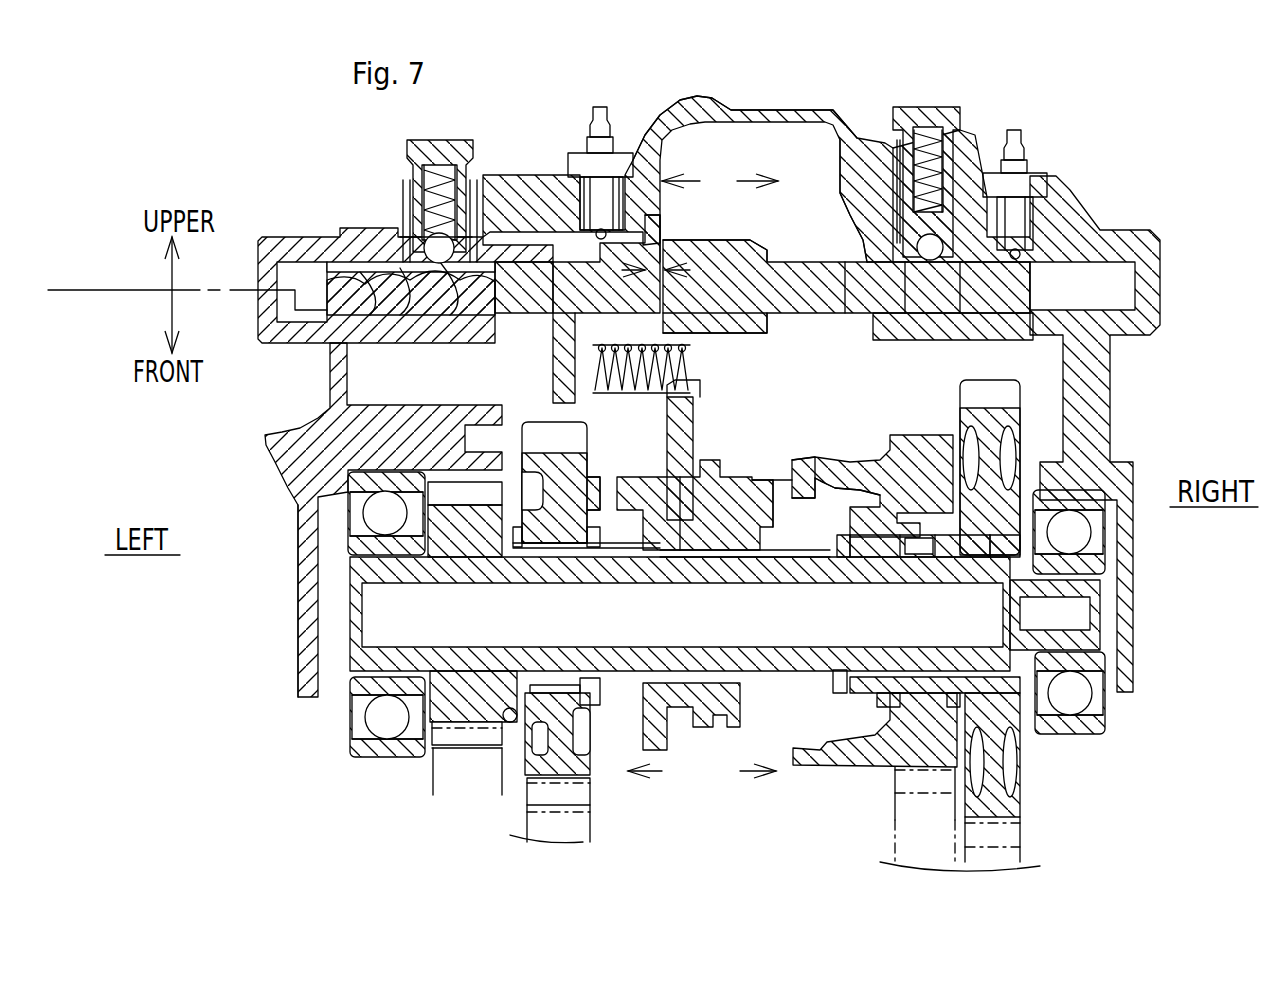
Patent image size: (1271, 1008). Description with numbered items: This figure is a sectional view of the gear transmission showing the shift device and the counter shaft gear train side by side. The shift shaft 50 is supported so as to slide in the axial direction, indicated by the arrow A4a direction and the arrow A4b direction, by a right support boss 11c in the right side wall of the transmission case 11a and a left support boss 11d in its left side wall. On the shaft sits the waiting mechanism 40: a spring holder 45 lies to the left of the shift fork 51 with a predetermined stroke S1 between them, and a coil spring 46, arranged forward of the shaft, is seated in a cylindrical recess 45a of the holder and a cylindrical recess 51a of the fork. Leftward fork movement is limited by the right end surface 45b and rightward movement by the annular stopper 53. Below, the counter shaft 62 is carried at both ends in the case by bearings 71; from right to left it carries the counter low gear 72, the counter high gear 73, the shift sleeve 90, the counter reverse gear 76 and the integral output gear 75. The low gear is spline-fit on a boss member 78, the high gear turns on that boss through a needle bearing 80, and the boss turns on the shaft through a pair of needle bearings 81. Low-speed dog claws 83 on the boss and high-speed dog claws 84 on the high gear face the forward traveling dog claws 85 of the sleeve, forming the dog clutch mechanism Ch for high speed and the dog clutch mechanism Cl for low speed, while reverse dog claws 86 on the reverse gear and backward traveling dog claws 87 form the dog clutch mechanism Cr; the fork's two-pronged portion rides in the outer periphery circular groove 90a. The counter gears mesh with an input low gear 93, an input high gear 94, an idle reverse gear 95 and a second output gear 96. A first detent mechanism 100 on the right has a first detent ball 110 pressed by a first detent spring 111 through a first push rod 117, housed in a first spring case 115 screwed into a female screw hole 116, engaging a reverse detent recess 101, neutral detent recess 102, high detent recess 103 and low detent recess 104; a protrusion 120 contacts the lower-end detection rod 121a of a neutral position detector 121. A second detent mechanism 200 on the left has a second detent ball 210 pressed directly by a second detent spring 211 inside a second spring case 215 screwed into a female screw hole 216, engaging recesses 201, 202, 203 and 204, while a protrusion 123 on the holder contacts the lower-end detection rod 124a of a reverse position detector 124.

The transmission case 11a is at (297, 517).
The right support boss 11c is at (1100, 350).
The left support boss 11d is at (312, 347).
The waiting mechanism 40 is at (690, 333).
The spring holder 45 is at (585, 405).
The cylindrical recess 45a is at (558, 345).
The right end surface 45b is at (655, 250).
The coil spring 46 is at (640, 395).
The shift shaft 50 is at (803, 290).
The shift fork 51 is at (682, 432).
The cylindrical recess 51a is at (688, 360).
The annular stopper 53 is at (740, 258).
The counter shaft 62 is at (393, 572).
The bearings 71 is at (368, 750).
The counter low gear 72 is at (1003, 805).
The counter high gear 73 is at (913, 758).
The output gear 75 is at (455, 715).
The counter reverse gear 76 is at (575, 768).
The boss member 78 is at (897, 537).
The needle bearing 80 is at (913, 535).
The needle bearings 81 is at (867, 553).
The low-speed dog claws 83 is at (862, 525).
The high-speed dog claws 84 is at (800, 500).
The forward traveling dog claws 85 is at (762, 480).
The reverse dog claws 86 is at (540, 535).
The backward traveling dog claws 87 is at (627, 510).
The shift sleeve 90 is at (707, 537).
The outer periphery circular groove 90a is at (690, 540).
The input low gear 93 is at (1020, 856).
The input high gear 94 is at (893, 858).
The idle reverse gear 95 is at (550, 825).
The second output gear 96 is at (470, 772).
The first detent mechanism 100 is at (985, 125).
The reverse detent recess 101 is at (1022, 300).
The neutral detent recess 102 is at (963, 287).
The high detent recess 103 is at (900, 290).
The low detent recess 104 is at (853, 293).
The first detent ball 110 is at (922, 252).
The first detent spring 111 is at (905, 135).
The first spring case 115 is at (940, 125).
The female screw hole 116 is at (897, 163).
The first push rod 117 is at (900, 230).
The protrusion for neutral detection 120 is at (1040, 287).
The neutral position detector 121 is at (1013, 205).
The lower-end detection rod 121a is at (1008, 250).
The protrusion for reverse detection 123 is at (648, 150).
The reverse position detector 124 is at (598, 195).
The lower-end detection rod 124a is at (595, 235).
The second detent mechanism 200 is at (383, 170).
The reverse detent recess 201 is at (505, 320).
The neutral detent recess 202 is at (478, 318).
The high detent recess 203 is at (432, 320).
The low detent recess 204 is at (385, 318).
The second detent ball 210 is at (437, 245).
The second detent spring 211 is at (400, 163).
The second spring case 215 is at (466, 147).
The female screw hole 216 is at (408, 200).
The arrow A4a direction A4a is at (754, 482).
The arrow A4b direction A4b is at (669, 484).
The dog clutch mechanism for forward traveling high-speed Ch is at (781, 477).
The dog clutch mechanism for forward traveling low-speed Cl is at (842, 492).
The dog clutch mechanism for backward traveling Cr is at (588, 498).
The predetermined stroke S1 is at (646, 289).